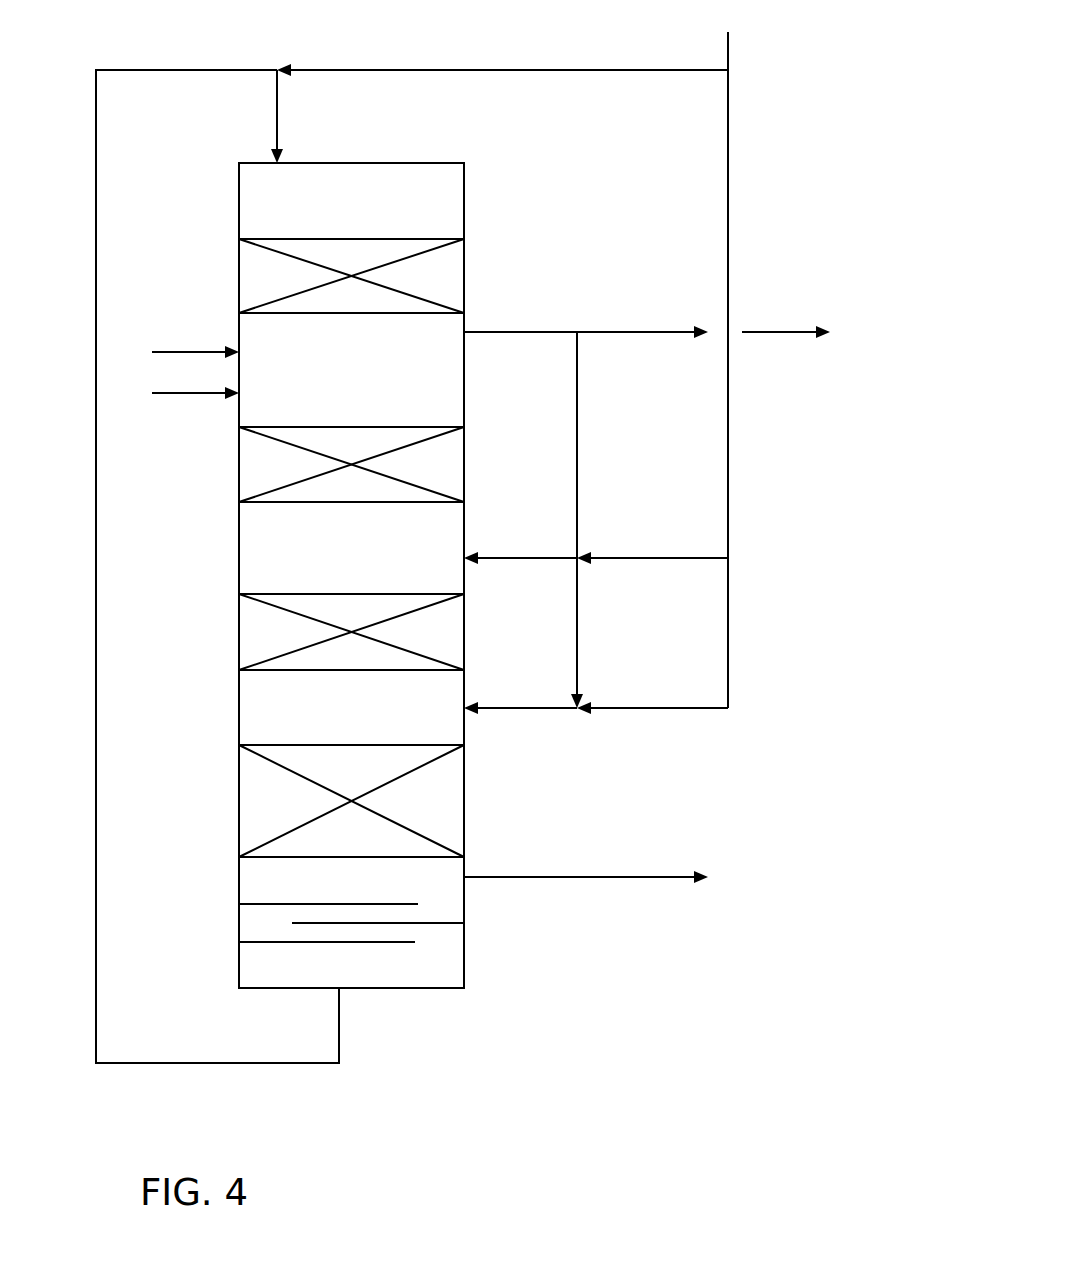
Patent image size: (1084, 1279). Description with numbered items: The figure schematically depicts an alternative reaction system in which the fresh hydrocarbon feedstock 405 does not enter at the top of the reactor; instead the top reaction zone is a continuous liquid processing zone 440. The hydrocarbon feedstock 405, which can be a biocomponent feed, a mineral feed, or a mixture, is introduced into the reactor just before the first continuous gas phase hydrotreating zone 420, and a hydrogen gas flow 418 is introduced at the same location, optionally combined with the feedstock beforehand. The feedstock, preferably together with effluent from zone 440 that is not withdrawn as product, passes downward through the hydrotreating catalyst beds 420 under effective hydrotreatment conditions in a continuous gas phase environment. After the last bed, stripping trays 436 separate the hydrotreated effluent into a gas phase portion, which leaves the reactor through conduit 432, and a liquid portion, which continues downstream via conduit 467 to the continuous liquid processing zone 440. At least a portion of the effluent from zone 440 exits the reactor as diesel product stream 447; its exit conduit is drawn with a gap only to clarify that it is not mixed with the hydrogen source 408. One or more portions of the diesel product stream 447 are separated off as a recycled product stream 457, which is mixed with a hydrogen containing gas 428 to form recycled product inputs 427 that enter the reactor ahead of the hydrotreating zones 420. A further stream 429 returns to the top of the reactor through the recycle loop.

The hydrocarbon feedstock 405 is at (182, 335).
The hydrogen gas flow 418 is at (170, 408).
The continuous gas phase hydrotreating zone 420 is at (228, 497).
The continuous liquid processing zone 440 is at (227, 277).
The diesel product stream 447 is at (508, 315).
The recycled product stream 457 is at (603, 417).
The hydrogen source 408 is at (747, 80).
The top recycle stream 429 is at (611, 62).
The hydrogen containing gas 428 is at (611, 538).
The recycled product input 427 is at (490, 547).
The conduit 432 is at (515, 858).
The stripping trays 436 is at (473, 913).
The conduit 467 is at (367, 1045).